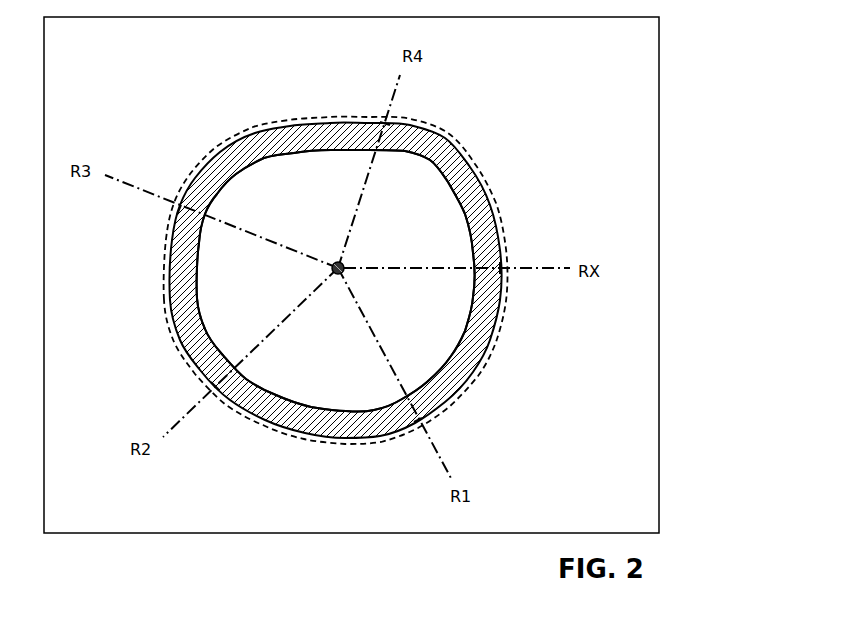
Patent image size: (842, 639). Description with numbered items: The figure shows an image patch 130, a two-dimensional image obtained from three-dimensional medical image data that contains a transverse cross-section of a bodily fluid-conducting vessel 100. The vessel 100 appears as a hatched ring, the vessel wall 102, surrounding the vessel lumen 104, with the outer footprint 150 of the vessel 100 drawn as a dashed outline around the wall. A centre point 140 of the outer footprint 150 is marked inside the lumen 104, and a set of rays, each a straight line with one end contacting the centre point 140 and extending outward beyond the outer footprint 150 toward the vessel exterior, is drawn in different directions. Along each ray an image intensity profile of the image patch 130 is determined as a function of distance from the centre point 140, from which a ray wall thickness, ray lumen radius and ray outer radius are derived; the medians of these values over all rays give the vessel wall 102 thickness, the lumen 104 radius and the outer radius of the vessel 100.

The vessel 100 is at (325, 268).
The vessel wall 102 is at (183, 287).
The vessel lumen 104 is at (277, 195).
The image patch 130 is at (659, 215).
The centre point 140 is at (280, 387).
The outer footprint 150 is at (474, 349).